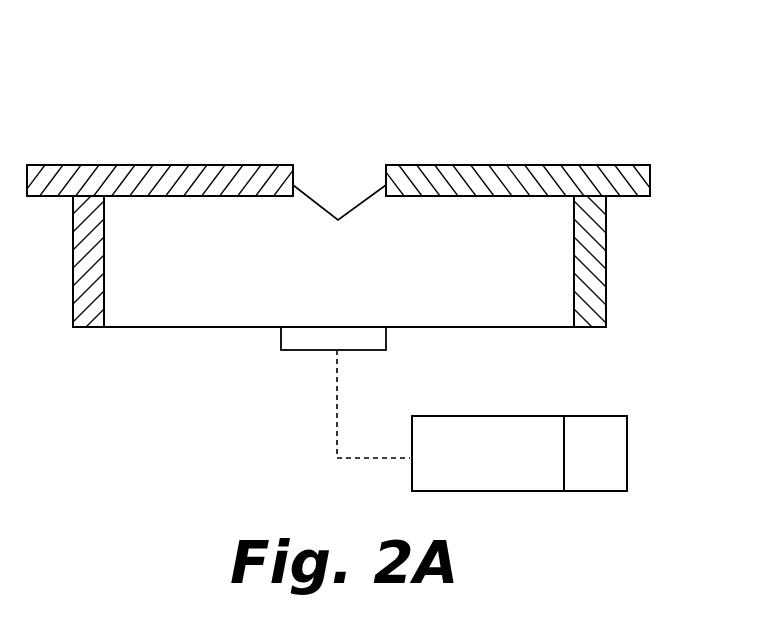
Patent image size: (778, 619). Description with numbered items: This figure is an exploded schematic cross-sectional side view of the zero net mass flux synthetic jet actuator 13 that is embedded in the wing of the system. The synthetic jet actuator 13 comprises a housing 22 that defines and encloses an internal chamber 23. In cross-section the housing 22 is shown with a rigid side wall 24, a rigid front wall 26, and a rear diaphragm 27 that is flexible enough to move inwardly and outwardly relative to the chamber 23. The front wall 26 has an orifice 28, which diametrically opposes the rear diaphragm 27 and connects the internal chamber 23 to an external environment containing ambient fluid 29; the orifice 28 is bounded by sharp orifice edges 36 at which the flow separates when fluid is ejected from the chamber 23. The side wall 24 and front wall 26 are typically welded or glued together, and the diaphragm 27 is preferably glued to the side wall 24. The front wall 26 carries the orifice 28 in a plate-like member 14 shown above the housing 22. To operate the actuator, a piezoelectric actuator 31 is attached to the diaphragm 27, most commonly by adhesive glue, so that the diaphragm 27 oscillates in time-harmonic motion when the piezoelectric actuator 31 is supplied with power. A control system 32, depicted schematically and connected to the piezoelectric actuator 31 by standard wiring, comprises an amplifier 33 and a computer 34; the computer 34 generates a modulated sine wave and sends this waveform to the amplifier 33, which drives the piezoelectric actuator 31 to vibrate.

The synthetic jet actuator 13 is at (131, 105).
The substrate 14 is at (630, 163).
The housing 22 is at (617, 252).
The internal chamber 23 is at (510, 274).
The side wall 24 is at (595, 283).
The front wall 26 is at (537, 163).
The rear diaphragm 27 is at (516, 327).
The orifice 28 is at (347, 166).
The ambient fluid 29 is at (488, 92).
The piezoelectric actuator 31 is at (307, 350).
The control system 32 is at (636, 493).
The amplifier 33 is at (507, 467).
The computer 34 is at (610, 467).
The orifice edges 36 is at (342, 240).